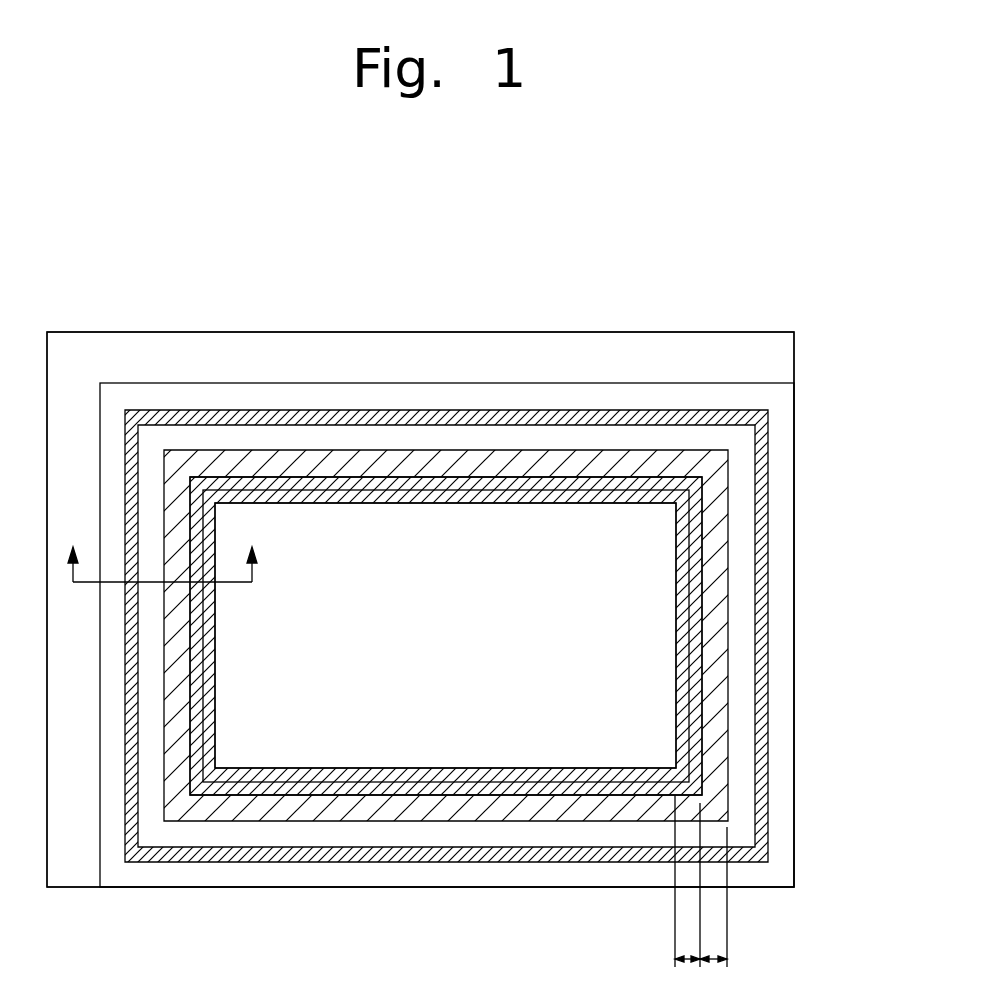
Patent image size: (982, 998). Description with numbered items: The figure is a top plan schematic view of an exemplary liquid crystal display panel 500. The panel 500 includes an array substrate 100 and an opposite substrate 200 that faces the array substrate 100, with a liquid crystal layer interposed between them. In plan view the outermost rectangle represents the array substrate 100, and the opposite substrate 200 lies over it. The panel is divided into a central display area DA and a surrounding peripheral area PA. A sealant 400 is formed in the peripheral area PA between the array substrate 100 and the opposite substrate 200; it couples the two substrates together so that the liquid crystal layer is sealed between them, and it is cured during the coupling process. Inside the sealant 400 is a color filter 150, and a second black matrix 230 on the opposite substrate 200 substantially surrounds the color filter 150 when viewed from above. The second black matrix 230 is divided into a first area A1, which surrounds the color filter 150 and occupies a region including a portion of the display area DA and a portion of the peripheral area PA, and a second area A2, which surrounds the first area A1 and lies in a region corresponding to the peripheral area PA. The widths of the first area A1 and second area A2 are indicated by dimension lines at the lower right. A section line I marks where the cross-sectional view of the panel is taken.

The LCD panel 500 is at (760, 231).
The array substrate 100 is at (400, 332).
The opposite substrate 200 is at (518, 384).
The peripheral area PA is at (678, 361).
The display area DA is at (634, 556).
The sealant 400 is at (768, 679).
The color filter 150 is at (513, 784).
The second black matrix 230 is at (407, 768).
The first area A1 is at (675, 959).
The second area A2 is at (768, 959).
The section line I-I' I is at (168, 547).